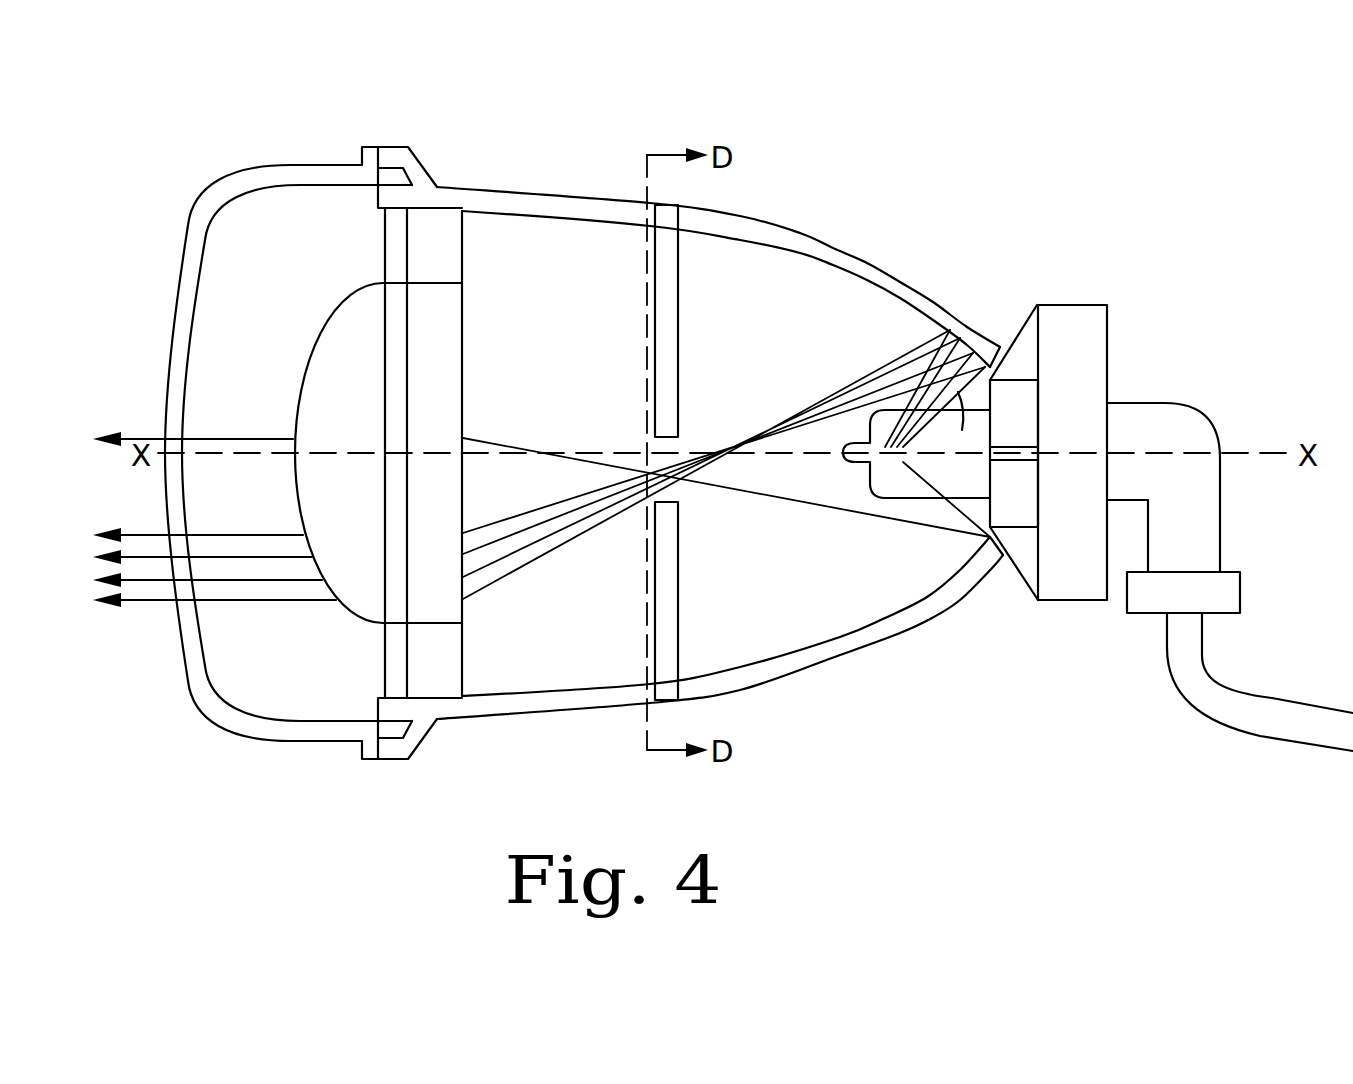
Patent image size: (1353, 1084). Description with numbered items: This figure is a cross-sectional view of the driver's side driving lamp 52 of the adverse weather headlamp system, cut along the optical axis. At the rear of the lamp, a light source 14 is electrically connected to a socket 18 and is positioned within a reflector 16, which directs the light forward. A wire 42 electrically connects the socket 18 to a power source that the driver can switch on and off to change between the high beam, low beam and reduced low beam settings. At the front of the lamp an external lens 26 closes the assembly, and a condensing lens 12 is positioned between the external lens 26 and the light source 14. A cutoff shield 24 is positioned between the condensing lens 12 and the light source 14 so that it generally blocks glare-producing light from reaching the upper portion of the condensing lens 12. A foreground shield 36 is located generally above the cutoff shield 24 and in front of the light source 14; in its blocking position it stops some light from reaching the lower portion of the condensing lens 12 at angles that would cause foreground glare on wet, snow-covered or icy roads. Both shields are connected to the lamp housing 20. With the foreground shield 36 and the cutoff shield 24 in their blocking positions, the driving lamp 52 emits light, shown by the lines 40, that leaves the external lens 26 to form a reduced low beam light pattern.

The condensing lens 12 is at (367, 598).
The light source 14 is at (996, 352).
The reflector 16 is at (833, 256).
The socket 18 is at (1073, 367).
The lamp housing 20 is at (543, 693).
The cutoff shield 24 is at (680, 647).
The external lens 26 is at (226, 192).
The foreground shield 36 is at (680, 258).
The emitted light 40 is at (152, 603).
The wire 42 is at (1255, 723).
The driver's side driving lamp 52 is at (696, 134).